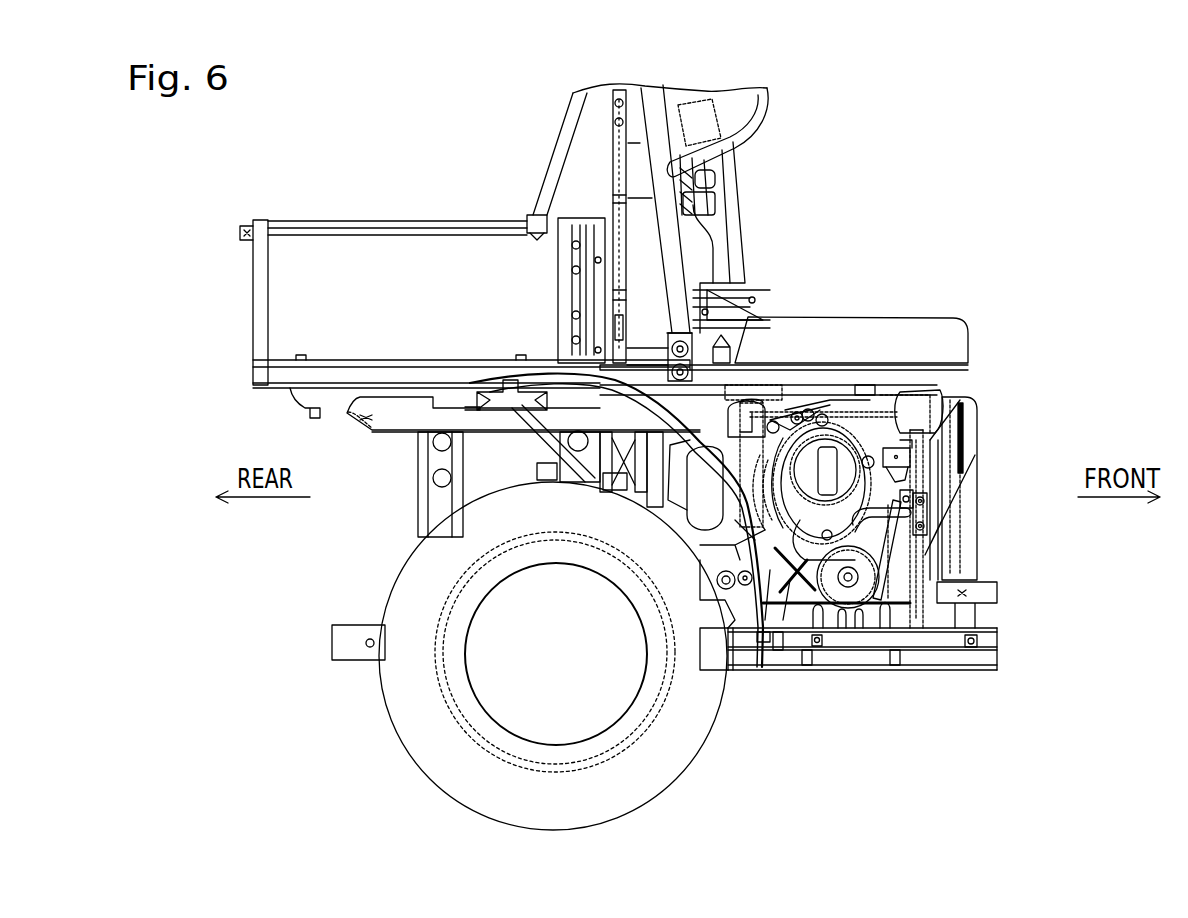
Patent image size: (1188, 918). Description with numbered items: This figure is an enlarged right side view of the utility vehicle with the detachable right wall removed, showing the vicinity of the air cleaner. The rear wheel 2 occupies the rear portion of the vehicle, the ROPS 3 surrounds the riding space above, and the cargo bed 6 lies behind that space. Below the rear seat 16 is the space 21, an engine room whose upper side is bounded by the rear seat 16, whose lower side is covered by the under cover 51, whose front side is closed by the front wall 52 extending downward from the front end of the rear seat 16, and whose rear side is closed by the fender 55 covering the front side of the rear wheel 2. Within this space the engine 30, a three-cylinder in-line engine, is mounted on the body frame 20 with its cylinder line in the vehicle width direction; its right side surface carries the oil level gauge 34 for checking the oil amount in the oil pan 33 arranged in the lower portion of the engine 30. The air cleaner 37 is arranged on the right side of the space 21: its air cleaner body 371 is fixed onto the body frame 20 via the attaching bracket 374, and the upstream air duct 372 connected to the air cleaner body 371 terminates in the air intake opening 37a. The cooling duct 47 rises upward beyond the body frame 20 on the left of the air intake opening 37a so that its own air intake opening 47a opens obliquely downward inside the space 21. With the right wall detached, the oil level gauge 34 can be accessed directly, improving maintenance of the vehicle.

The rear wheel 2 is at (410, 757).
The ROPS 3 is at (643, 143).
The cargo bed 6 is at (263, 220).
The rear seat 16 is at (917, 317).
The body frame 20 is at (457, 422).
The space 21 is at (884, 383).
The engine 30 is at (893, 420).
The oil pan 33 is at (898, 625).
The oil level gauge 34 is at (915, 473).
The air cleaner 37 is at (900, 540).
The air intake opening 37a is at (797, 413).
The cooling duct 47 is at (703, 527).
The air intake opening 47a is at (752, 412).
The under cover 51 is at (963, 673).
The front wall 52 is at (972, 413).
The fender 55 is at (733, 410).
The air cleaner body 371 is at (840, 507).
The upstream air duct 372 is at (783, 605).
The attaching bracket 374 is at (923, 538).